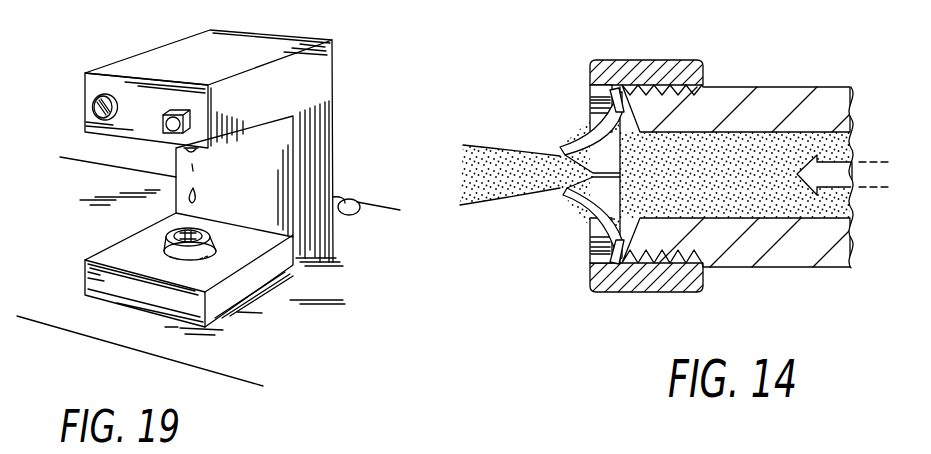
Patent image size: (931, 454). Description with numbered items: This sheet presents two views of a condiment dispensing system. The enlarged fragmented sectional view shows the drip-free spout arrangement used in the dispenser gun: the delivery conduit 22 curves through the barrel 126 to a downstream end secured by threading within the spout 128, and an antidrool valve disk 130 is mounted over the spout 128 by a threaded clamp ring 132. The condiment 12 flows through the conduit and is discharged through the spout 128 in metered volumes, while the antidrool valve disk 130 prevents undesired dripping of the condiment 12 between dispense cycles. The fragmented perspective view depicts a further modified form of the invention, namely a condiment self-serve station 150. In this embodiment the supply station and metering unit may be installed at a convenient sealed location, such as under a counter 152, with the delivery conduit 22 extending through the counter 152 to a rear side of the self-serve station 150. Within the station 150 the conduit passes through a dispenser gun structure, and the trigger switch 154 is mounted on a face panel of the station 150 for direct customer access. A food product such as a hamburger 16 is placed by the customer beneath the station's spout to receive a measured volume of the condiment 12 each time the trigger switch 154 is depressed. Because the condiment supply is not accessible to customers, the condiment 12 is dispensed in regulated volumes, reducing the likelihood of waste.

In FIG. 14, the condiment 12 is at (500, 190).
In FIG. 19, the hamburger 16 is at (160, 240).
In FIG. 19, the delivery conduit 22 is at (340, 200).
In FIG. 14, the barrel 126 is at (788, 92).
In FIG. 14, the spout 128 is at (684, 117).
In FIG. 14, the antidrool valve disk 130 is at (583, 203).
In FIG. 14, the threaded clamp ring 132 is at (662, 285).
In FIG. 19, the condiment self-serve station 150 is at (327, 98).
In FIG. 19, the counter 152 is at (267, 365).
In FIG. 19, the trigger switch 154 is at (167, 133).